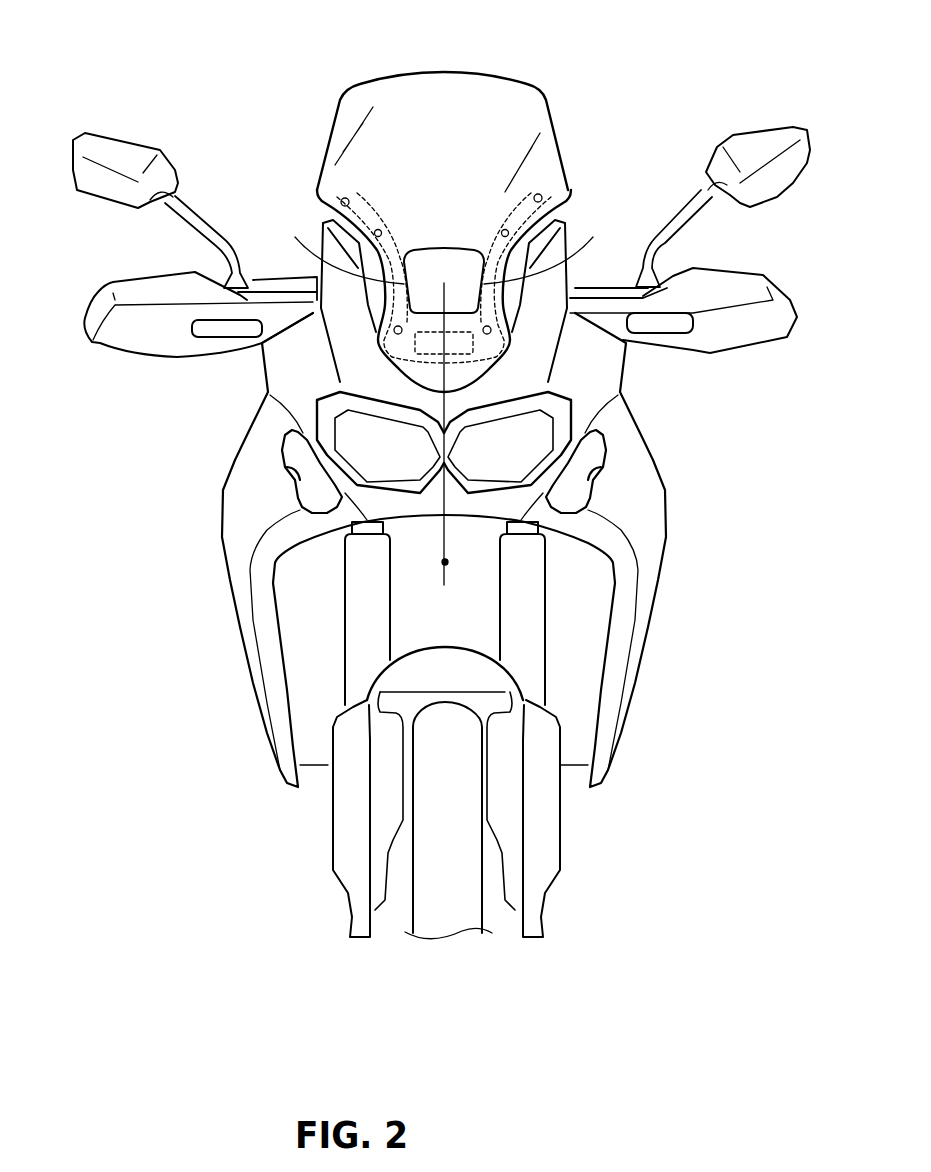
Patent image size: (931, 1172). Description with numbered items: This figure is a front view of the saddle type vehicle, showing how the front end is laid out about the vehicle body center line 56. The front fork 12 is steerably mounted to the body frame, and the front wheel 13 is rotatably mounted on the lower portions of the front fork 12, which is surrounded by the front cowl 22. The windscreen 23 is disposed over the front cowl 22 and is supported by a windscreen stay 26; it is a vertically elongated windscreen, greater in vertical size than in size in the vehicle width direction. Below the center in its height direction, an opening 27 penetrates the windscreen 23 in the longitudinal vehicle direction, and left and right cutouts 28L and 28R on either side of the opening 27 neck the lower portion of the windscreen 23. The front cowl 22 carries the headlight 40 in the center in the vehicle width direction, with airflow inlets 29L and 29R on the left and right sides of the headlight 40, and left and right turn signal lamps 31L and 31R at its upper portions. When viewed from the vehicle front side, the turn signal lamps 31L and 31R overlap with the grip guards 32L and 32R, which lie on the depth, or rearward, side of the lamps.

The front fork 12 is at (527, 605).
The front wheel 13 is at (447, 912).
The front cowl 22 is at (237, 490).
The windscreen 23 is at (445, 95).
The windscreen stay 26 is at (365, 212).
The opening 27 is at (436, 265).
The right cutout 28R is at (322, 275).
The left cutout 28L is at (562, 272).
The right airflow inlet 29R is at (297, 510).
The left airflow inlet 29L is at (591, 510).
The right turn signal lamp 31R is at (232, 332).
The left turn signal lamp 31L is at (668, 323).
The right grip guard 32R is at (138, 335).
The left grip guard 32L is at (748, 322).
The headlight 40 is at (388, 468).
The vehicle body center line 56 is at (445, 562).